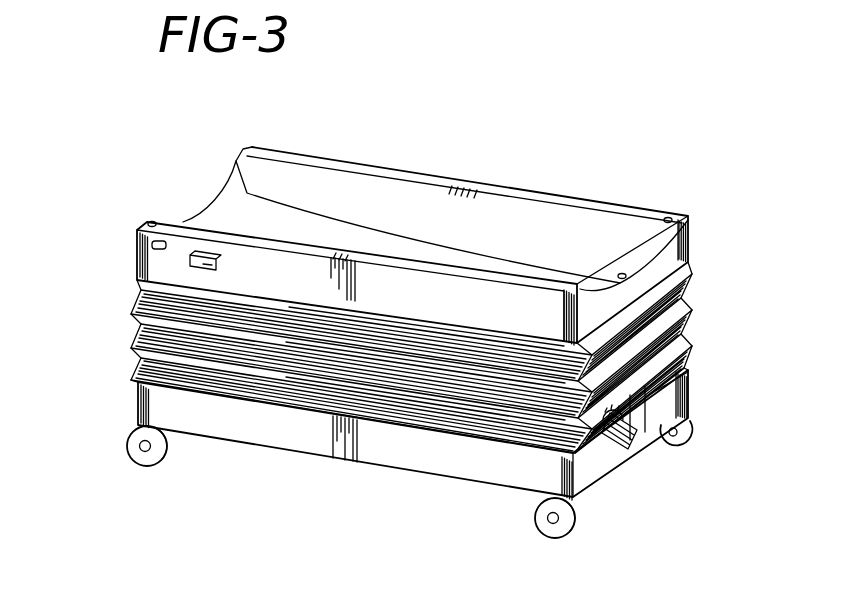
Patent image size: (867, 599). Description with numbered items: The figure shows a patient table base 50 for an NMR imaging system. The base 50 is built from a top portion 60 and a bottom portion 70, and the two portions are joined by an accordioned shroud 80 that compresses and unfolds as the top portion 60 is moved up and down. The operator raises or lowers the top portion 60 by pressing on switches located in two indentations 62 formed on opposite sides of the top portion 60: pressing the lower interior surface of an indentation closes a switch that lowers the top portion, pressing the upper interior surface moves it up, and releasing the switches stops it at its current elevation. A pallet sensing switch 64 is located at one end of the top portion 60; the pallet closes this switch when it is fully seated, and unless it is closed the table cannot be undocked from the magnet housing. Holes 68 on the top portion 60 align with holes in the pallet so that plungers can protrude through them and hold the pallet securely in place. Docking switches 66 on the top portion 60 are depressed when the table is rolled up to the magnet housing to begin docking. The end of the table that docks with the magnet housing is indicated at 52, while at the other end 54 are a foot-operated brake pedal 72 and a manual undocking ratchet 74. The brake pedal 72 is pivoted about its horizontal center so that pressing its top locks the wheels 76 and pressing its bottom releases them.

The patient table base 50 is at (715, 282).
The docking end 52 is at (122, 374).
The other end 54 is at (690, 388).
The top portion 60 is at (690, 246).
The indentations 62 is at (212, 257).
The pallet sensing switch 64 is at (620, 274).
The docking switches 66 is at (152, 245).
The holes 68 is at (150, 221).
The bottom portion 70 is at (403, 458).
The foot-operated brake pedal 72 is at (624, 452).
The manual undocking ratchet 74 is at (618, 402).
The wheels 76 is at (158, 458).
The accordioned shroud 80 is at (140, 330).